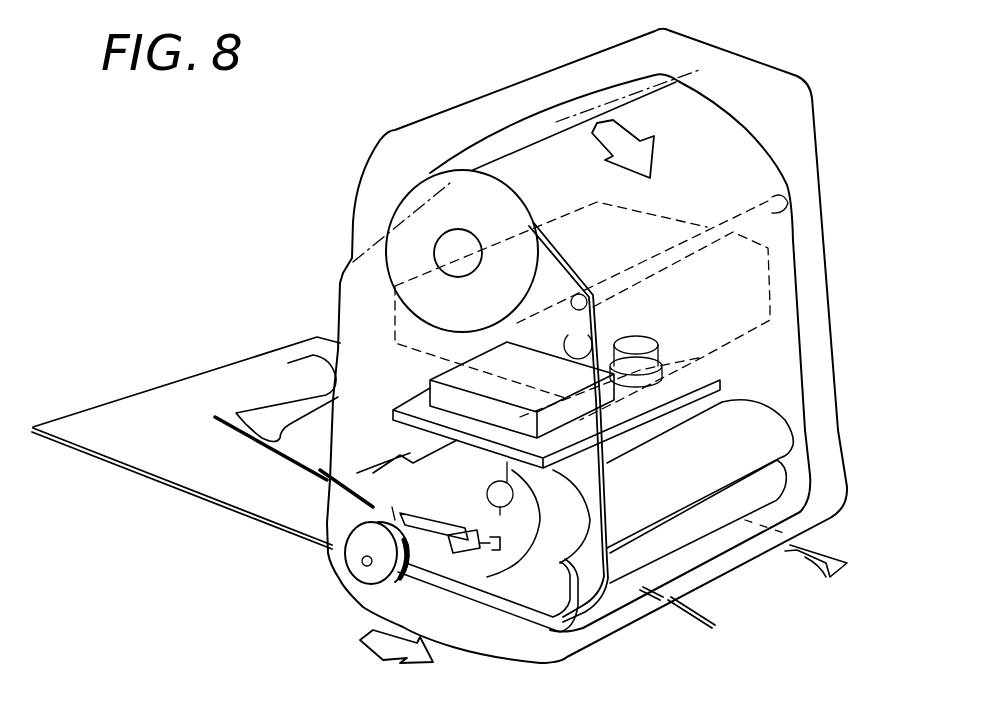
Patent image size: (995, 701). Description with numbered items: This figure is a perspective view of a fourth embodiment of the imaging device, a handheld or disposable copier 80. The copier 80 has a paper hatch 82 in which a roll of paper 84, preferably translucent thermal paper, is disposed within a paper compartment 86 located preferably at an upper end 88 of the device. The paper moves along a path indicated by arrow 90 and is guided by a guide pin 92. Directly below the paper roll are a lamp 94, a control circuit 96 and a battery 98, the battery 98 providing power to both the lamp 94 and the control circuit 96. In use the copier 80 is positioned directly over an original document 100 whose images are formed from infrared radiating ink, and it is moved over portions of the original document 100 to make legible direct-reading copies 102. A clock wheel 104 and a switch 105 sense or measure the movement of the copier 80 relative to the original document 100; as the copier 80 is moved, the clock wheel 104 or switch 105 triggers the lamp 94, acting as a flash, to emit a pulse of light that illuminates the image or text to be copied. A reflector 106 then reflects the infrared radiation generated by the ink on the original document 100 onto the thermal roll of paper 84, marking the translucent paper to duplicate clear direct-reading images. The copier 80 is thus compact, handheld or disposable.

The copier 80 is at (308, 606).
The paper hatch 82 is at (700, 41).
The roll of paper 84 is at (720, 125).
The paper compartment 86 is at (807, 137).
The upper end 88 is at (585, 72).
The arrow 90 is at (603, 113).
The guide pin 92 is at (790, 212).
The lamp 94 is at (503, 553).
The control circuit 96 is at (707, 377).
The battery 98 is at (753, 310).
The original document 100 is at (783, 573).
The direct-reading copies 102 is at (230, 492).
The clock wheel 104 is at (343, 560).
The switch 105 is at (447, 568).
The reflector 106 is at (780, 443).